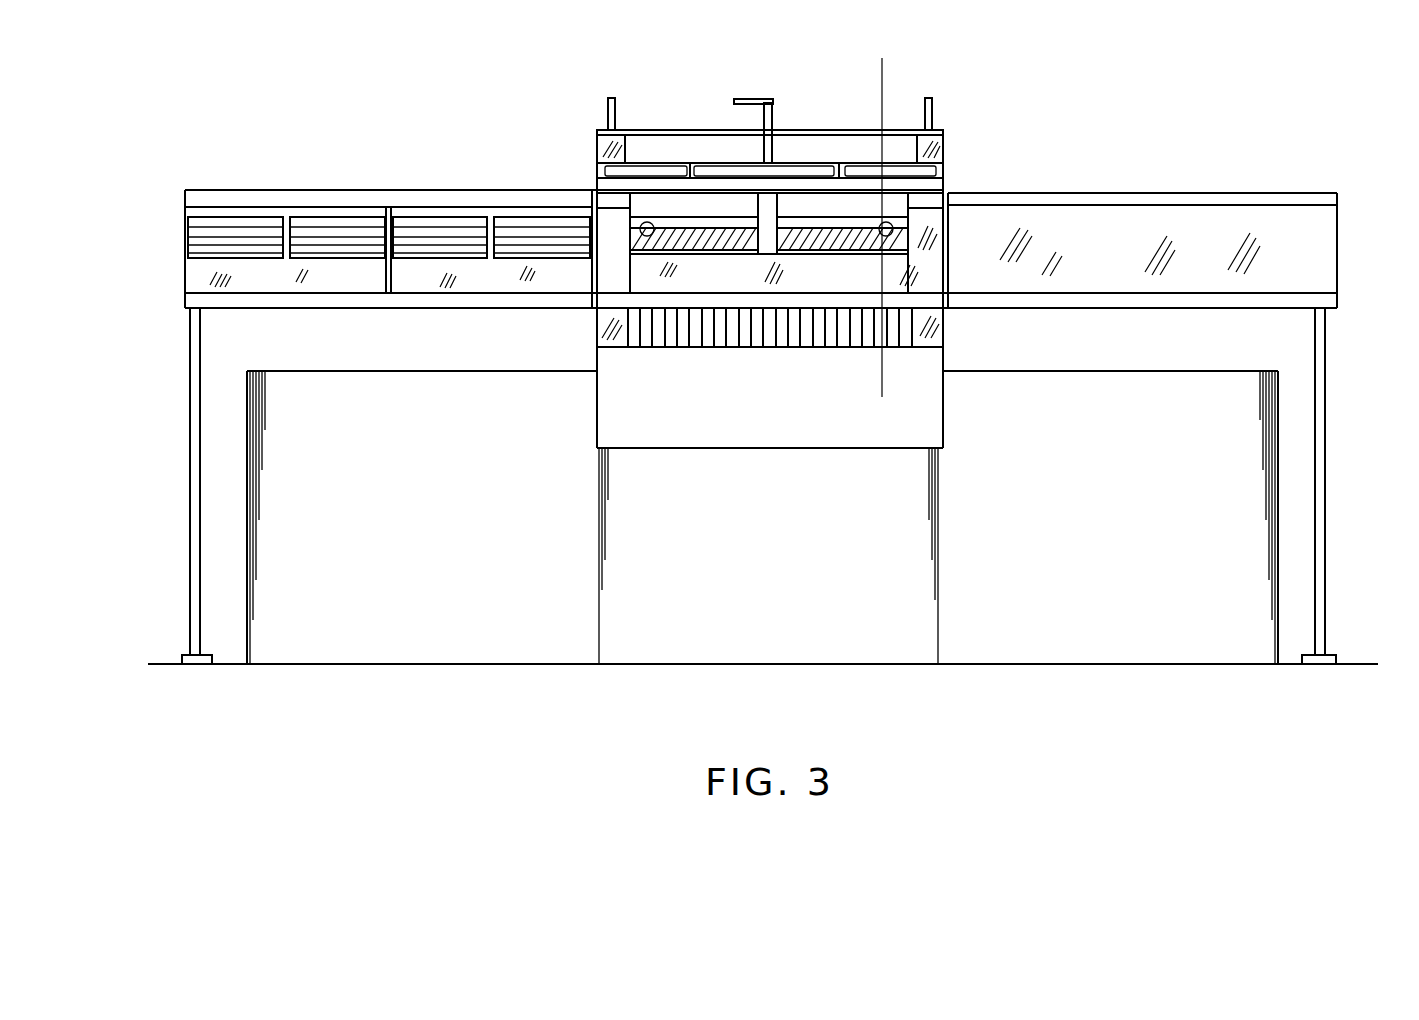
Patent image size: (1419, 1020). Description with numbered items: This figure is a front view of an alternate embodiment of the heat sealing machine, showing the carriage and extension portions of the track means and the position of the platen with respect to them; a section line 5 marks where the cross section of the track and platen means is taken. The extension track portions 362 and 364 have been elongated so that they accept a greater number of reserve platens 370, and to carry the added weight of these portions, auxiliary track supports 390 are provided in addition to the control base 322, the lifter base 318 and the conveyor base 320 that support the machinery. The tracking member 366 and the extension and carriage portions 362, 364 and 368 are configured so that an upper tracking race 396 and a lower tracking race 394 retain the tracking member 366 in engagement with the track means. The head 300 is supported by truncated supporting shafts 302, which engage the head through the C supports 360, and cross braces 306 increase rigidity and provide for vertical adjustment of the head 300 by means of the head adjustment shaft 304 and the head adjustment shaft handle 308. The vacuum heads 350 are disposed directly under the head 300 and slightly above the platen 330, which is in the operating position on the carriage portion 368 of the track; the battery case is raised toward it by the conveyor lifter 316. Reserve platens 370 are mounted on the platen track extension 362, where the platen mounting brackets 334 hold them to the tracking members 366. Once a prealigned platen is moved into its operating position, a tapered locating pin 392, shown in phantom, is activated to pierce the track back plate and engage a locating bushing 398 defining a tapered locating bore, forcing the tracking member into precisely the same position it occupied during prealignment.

The section line 5- 5 is at (920, 397).
The head 300 is at (945, 186).
The truncated supporting shafts 302 is at (607, 106).
The head adjustment shaft 304 is at (773, 119).
The cross braces 306 is at (722, 130).
The head adjustment shaft handle 308 is at (766, 98).
The conveyor lifter 316 is at (778, 396).
The lifter base 318 is at (791, 656).
The conveyor base 320 is at (421, 656).
The control base 322 is at (1129, 656).
The platen 330 is at (771, 256).
The platen mounting brackets 334 is at (203, 223).
The vacuum heads 350 is at (712, 215).
The C supports 360 is at (597, 150).
The platen track extension 362 is at (298, 191).
The extension track portion 364 is at (1127, 262).
The tracking member 366 is at (292, 230).
The carriage portion of the track means 368 is at (626, 222).
The reserve platens 370 is at (365, 237).
The auxiliary track supports 390 is at (190, 482).
The locating pins 392 is at (640, 231).
The lower tracking race 394 is at (385, 300).
The upper tracking race 396 is at (378, 202).
The locating bushing 398 is at (925, 238).